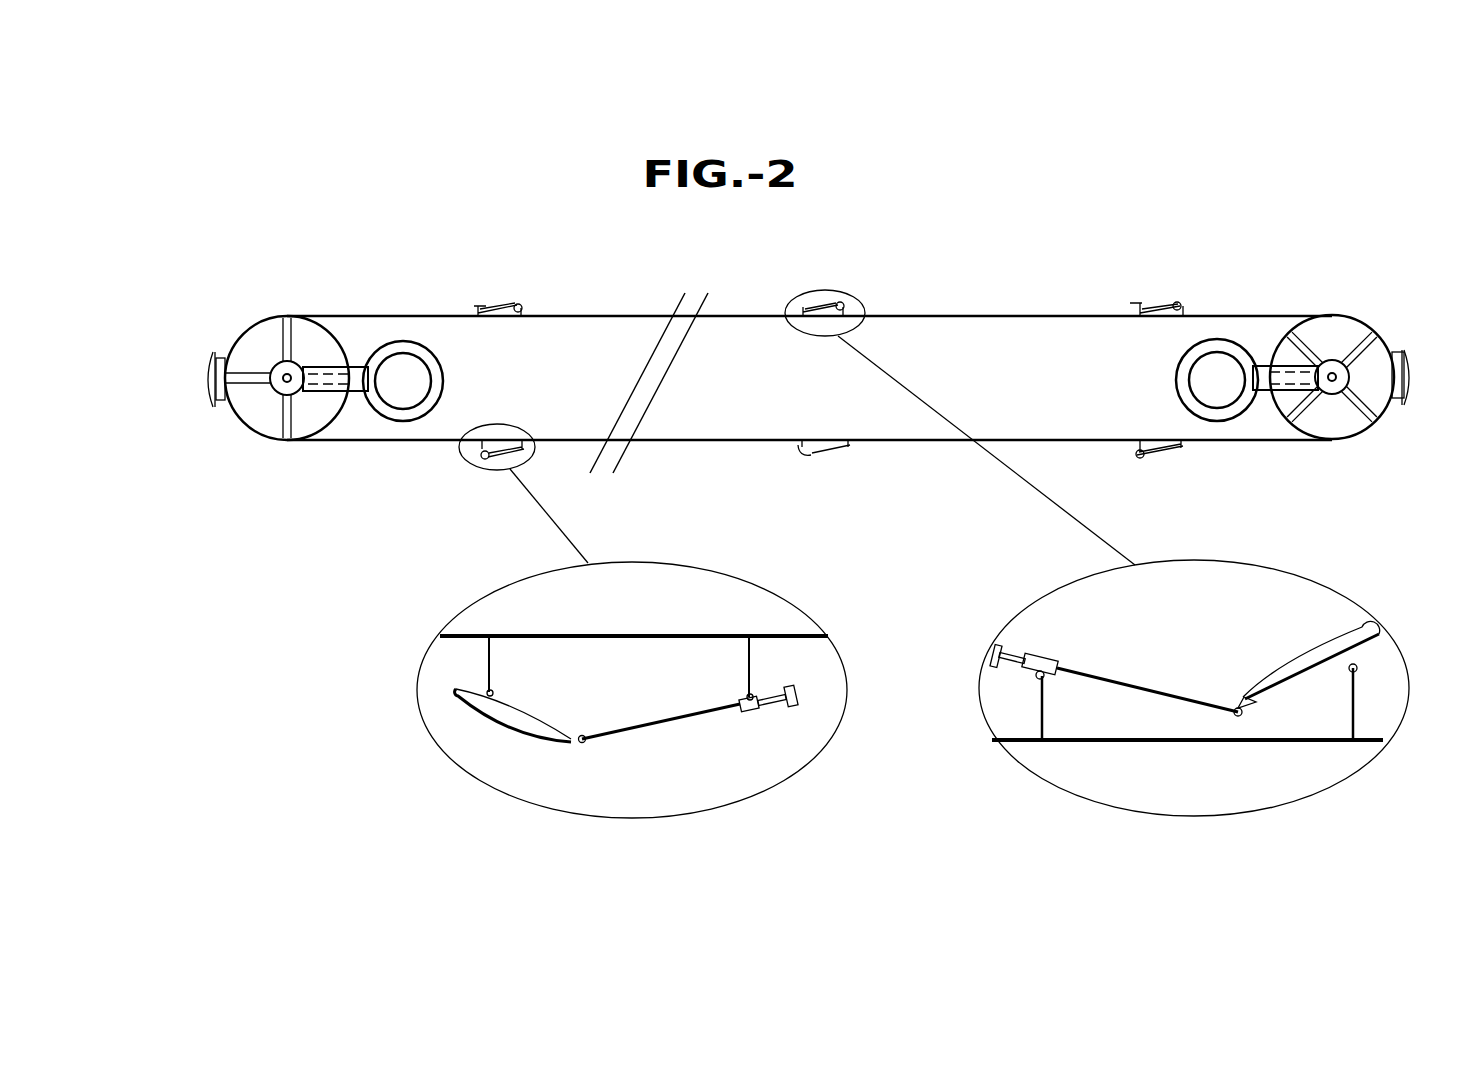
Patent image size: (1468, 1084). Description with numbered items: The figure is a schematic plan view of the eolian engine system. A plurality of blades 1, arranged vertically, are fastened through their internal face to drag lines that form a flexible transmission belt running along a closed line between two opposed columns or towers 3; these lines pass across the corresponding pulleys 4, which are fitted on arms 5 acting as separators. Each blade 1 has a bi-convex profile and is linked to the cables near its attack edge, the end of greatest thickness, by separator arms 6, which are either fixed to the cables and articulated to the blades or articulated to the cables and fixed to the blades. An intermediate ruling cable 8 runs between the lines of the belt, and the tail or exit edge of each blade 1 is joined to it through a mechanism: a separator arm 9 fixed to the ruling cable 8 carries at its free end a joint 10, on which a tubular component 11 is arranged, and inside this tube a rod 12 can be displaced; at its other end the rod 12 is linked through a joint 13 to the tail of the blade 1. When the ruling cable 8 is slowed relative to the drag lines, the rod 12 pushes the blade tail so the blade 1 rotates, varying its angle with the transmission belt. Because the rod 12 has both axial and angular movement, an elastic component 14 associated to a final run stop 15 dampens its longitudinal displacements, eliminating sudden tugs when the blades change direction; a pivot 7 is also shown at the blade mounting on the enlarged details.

The blade 1 is at (212, 352).
The column or tower 3 is at (405, 368).
The pulley 4 is at (260, 405).
The arm 5 is at (330, 364).
The separator arm 6 is at (798, 443).
The pivot 7 is at (483, 697).
The ruling cable 8 is at (983, 317).
The separator arm 9 is at (850, 443).
The joint 10 is at (1040, 677).
The tubular component 11 is at (755, 707).
The rod 12 is at (825, 452).
The joint 13 is at (583, 742).
The elastic component 14 is at (778, 708).
The final run stop 15 is at (800, 700).